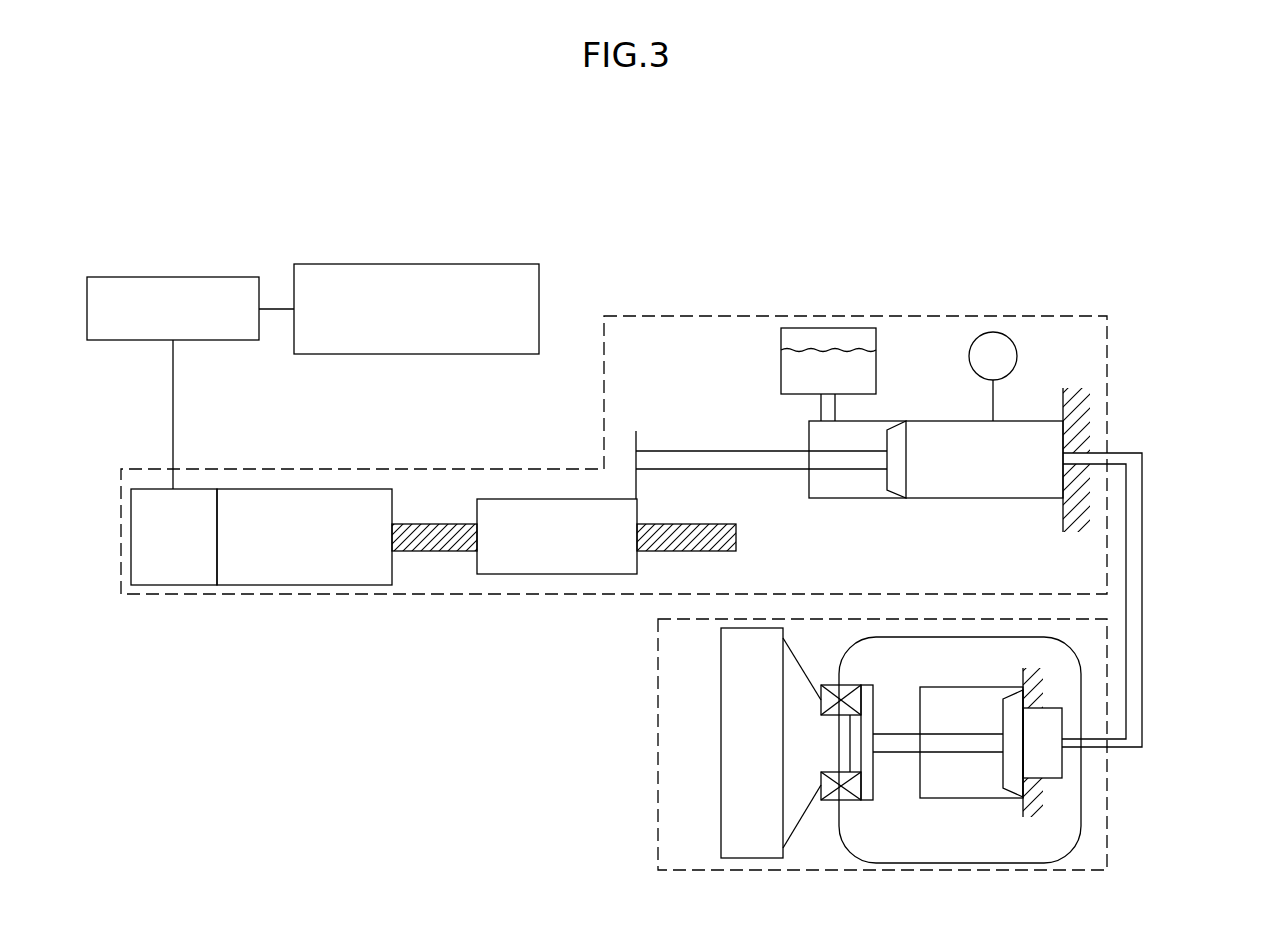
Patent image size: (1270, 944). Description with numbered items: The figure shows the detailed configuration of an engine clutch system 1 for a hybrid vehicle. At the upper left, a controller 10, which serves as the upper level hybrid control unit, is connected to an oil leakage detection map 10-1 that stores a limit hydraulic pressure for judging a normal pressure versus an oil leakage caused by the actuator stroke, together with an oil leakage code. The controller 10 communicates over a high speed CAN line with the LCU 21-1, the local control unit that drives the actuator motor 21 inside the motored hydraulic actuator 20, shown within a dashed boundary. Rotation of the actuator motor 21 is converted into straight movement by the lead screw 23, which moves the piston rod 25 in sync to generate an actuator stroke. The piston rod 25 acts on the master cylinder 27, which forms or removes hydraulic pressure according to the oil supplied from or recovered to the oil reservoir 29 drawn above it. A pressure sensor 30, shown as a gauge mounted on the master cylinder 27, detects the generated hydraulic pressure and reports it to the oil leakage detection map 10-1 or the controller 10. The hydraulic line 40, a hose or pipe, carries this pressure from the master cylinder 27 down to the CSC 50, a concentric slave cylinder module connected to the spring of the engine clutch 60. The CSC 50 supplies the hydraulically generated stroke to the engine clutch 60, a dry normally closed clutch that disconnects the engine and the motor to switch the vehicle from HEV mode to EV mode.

The engine clutch system 1 is at (566, 250).
The controller 10 is at (172, 277).
The oil leakage detection map 10-1 is at (417, 264).
The motored hydraulic actuator 20 is at (557, 575).
The actuator motor 21 is at (297, 586).
The LCU (Local Control Unit) 21-1 is at (163, 586).
The lead screw 23 is at (657, 552).
The piston rod 25 is at (706, 458).
The master cylinder 27 is at (925, 421).
The oil reservoir 29 is at (831, 332).
The pressure sensor 30 is at (1018, 356).
The hydraulic line 40 is at (1142, 600).
The CSC (Concentric Slave Cylinder) 50 is at (1071, 812).
The engine clutch 60 is at (730, 818).